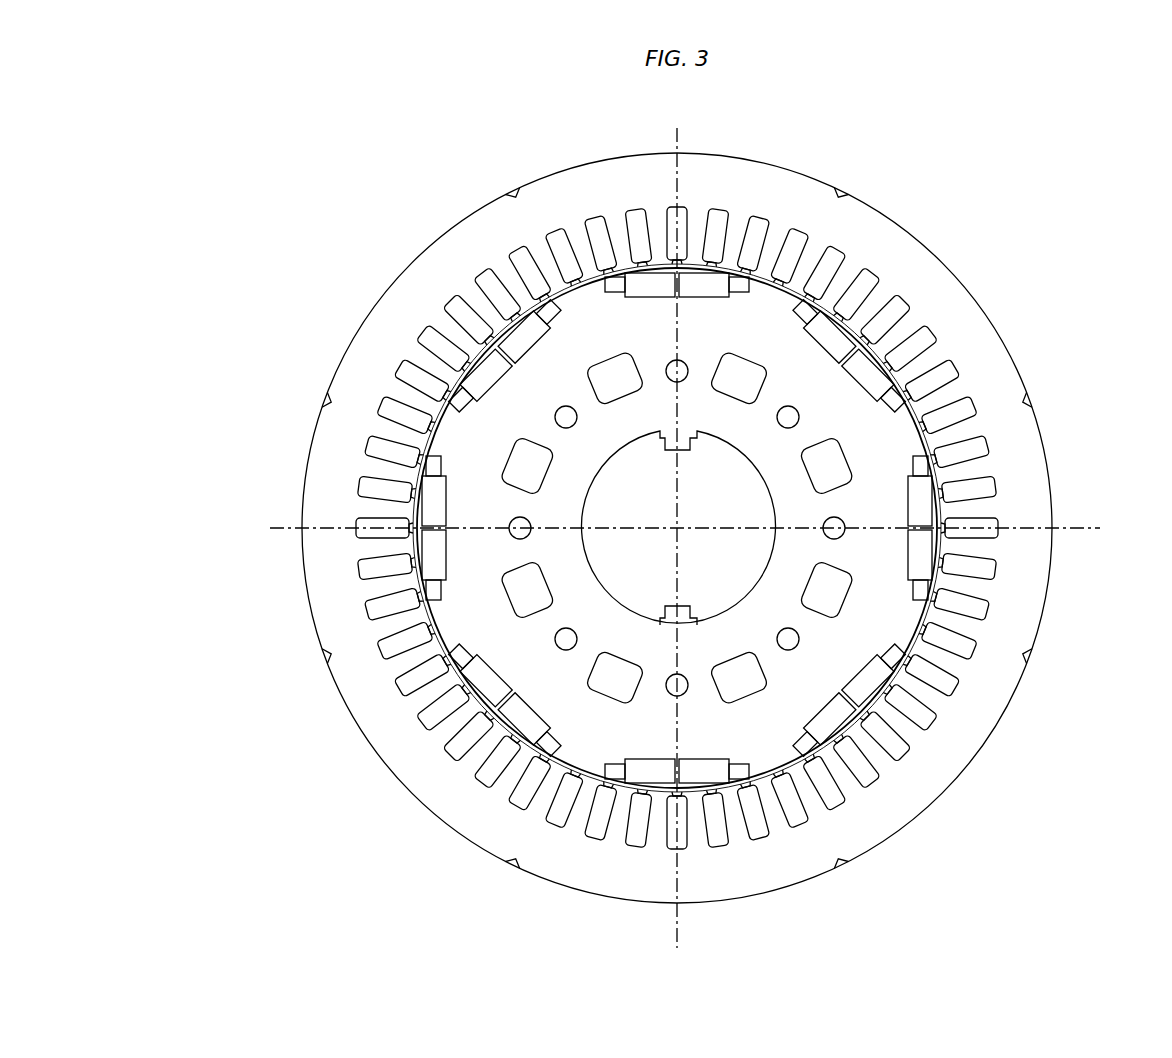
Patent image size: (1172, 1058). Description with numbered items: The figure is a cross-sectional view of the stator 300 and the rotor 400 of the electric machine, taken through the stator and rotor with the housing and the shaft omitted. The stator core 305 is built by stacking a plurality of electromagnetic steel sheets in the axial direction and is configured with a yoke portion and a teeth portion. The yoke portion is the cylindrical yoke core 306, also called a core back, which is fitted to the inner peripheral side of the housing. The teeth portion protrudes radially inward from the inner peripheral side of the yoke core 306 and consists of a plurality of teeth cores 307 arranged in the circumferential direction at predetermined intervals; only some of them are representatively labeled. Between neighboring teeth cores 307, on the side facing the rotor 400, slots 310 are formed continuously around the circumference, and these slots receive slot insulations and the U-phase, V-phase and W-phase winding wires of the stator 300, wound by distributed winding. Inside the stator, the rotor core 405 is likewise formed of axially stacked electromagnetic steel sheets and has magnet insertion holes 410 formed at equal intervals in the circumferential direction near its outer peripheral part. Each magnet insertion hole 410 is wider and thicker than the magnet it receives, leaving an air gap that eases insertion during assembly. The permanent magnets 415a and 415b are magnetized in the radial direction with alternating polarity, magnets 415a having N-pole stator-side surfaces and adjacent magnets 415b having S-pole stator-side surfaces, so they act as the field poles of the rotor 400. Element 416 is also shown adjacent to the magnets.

The stator 300 is at (332, 422).
The stator core 305 is at (500, 197).
The yoke core 306 is at (856, 210).
The teeth cores 307 is at (887, 290).
The slots 310 is at (960, 368).
The rotor 400 is at (895, 620).
The rotor core 405 is at (780, 763).
The magnet insertion holes 410 is at (445, 558).
The permanent magnets 415a is at (527, 337).
The permanent magnets 415b is at (432, 505).
The magnet end block 416 is at (927, 470).